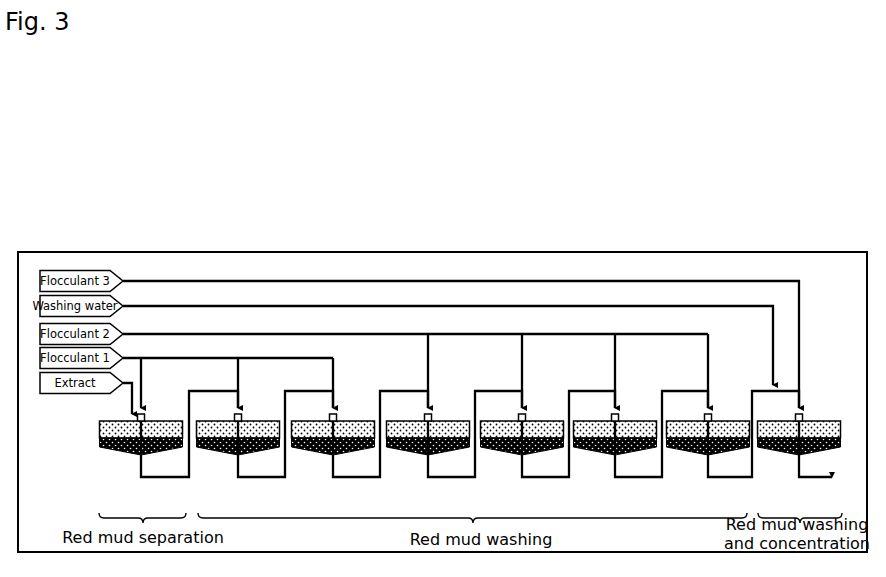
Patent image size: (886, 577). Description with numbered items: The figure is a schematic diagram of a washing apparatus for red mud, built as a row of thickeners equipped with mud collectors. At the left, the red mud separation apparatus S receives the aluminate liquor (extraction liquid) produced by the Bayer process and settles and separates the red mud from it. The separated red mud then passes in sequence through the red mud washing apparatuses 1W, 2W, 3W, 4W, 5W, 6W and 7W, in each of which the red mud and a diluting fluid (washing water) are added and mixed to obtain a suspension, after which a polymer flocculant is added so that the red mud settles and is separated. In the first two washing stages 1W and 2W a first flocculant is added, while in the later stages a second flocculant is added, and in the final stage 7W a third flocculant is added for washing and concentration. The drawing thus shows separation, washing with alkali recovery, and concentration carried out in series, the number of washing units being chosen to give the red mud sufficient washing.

The red mud separation apparatus S is at (141, 461).
The red mud washing apparatus 1W is at (238, 461).
The red mud washing apparatus 2W is at (333, 461).
The red mud washing apparatus 3W is at (428, 461).
The red mud washing apparatus 4W is at (522, 461).
The red mud washing apparatus 5W is at (615, 461).
The red mud washing apparatus 6W is at (708, 461).
The red mud washing apparatus 7W is at (799, 461).